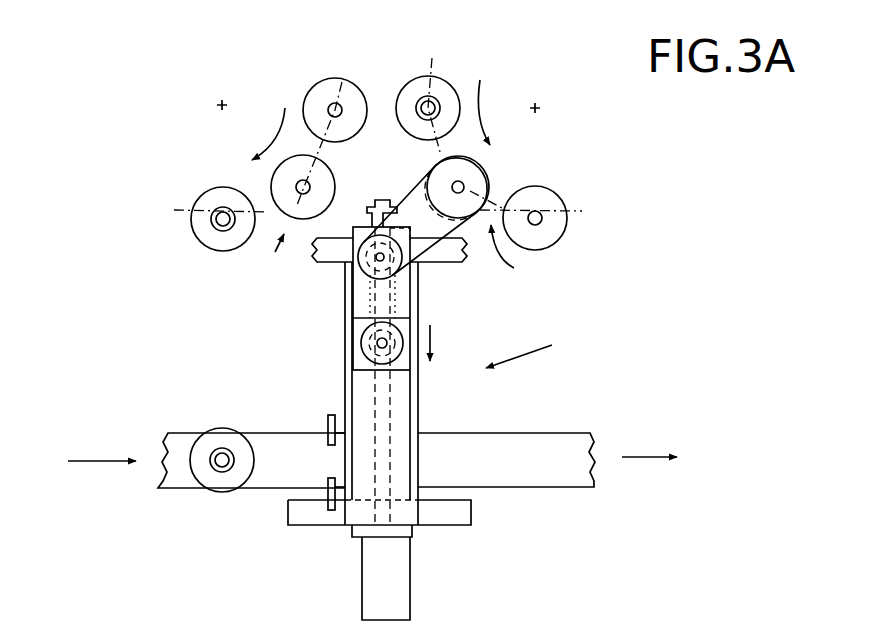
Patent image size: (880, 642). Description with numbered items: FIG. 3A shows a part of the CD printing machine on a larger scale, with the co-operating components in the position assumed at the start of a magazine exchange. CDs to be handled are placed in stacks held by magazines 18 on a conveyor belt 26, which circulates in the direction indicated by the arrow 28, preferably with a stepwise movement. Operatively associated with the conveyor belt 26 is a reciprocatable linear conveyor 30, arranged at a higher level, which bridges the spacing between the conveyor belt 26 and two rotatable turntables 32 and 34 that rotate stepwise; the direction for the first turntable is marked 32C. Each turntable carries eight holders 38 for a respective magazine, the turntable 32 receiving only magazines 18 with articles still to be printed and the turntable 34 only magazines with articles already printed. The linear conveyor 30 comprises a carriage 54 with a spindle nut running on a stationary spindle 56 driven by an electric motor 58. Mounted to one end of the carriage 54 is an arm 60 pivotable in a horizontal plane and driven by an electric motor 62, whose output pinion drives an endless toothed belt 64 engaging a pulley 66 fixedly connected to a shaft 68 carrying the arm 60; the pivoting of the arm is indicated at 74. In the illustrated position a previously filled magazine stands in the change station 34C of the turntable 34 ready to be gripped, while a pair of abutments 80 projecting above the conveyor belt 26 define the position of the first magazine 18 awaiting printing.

The magazine 18 is at (212, 502).
The conveyor belt 26 is at (521, 451).
The arrow 28 is at (636, 457).
The linear conveyor 30 is at (536, 345).
The turntable 32 is at (333, 80).
The rotation direction of rollers 32 32C is at (229, 238).
The turntable 34 is at (428, 78).
The change station 34C is at (526, 238).
The holder 38 is at (480, 177).
The carriage 54 is at (352, 306).
The spindle 56 is at (388, 424).
The electric motor 58 is at (372, 588).
The arm 60 is at (416, 205).
The electric motor 62 is at (366, 356).
The endless toothed belt 64 is at (397, 303).
The pulley 66 is at (372, 248).
The shaft 68 is at (395, 268).
The pivot direction 74 is at (430, 325).
The abutments 80 is at (330, 422).